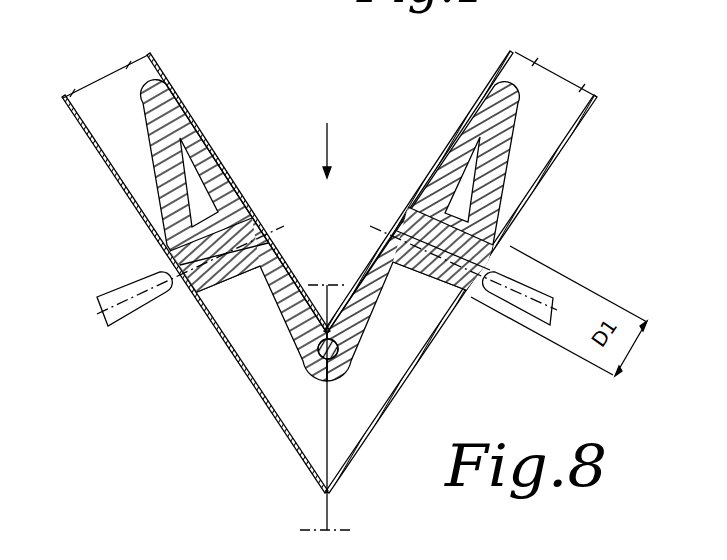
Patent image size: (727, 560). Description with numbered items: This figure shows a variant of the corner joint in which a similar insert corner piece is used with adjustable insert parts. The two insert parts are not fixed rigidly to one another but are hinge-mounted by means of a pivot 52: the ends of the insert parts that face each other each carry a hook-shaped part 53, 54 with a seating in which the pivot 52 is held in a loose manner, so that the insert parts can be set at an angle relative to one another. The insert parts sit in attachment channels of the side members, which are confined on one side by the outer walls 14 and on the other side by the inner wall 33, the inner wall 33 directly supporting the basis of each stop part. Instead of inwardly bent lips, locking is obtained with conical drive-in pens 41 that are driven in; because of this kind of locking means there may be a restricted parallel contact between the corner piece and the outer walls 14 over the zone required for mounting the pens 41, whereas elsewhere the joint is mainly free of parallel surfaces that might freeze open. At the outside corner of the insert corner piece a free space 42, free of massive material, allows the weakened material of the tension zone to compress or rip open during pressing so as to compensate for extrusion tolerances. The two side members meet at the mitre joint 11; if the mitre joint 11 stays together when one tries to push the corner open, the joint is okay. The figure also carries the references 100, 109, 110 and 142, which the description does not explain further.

The outer walls 14 is at (345, 265).
The left plate wall 142 is at (254, 385).
The free space 42 is at (405, 380).
The gap dimension 110 is at (108, 85).
The gap dimension 109 is at (557, 78).
The inner wall 33 is at (147, 55).
The hook-shaped part 54 is at (302, 273).
The hook-shaped part 53 is at (378, 262).
The pivot 52 is at (312, 363).
The drive-in pens 41 is at (126, 287).
The mitre joint 11 is at (328, 517).
The assembly 100 is at (341, 137).